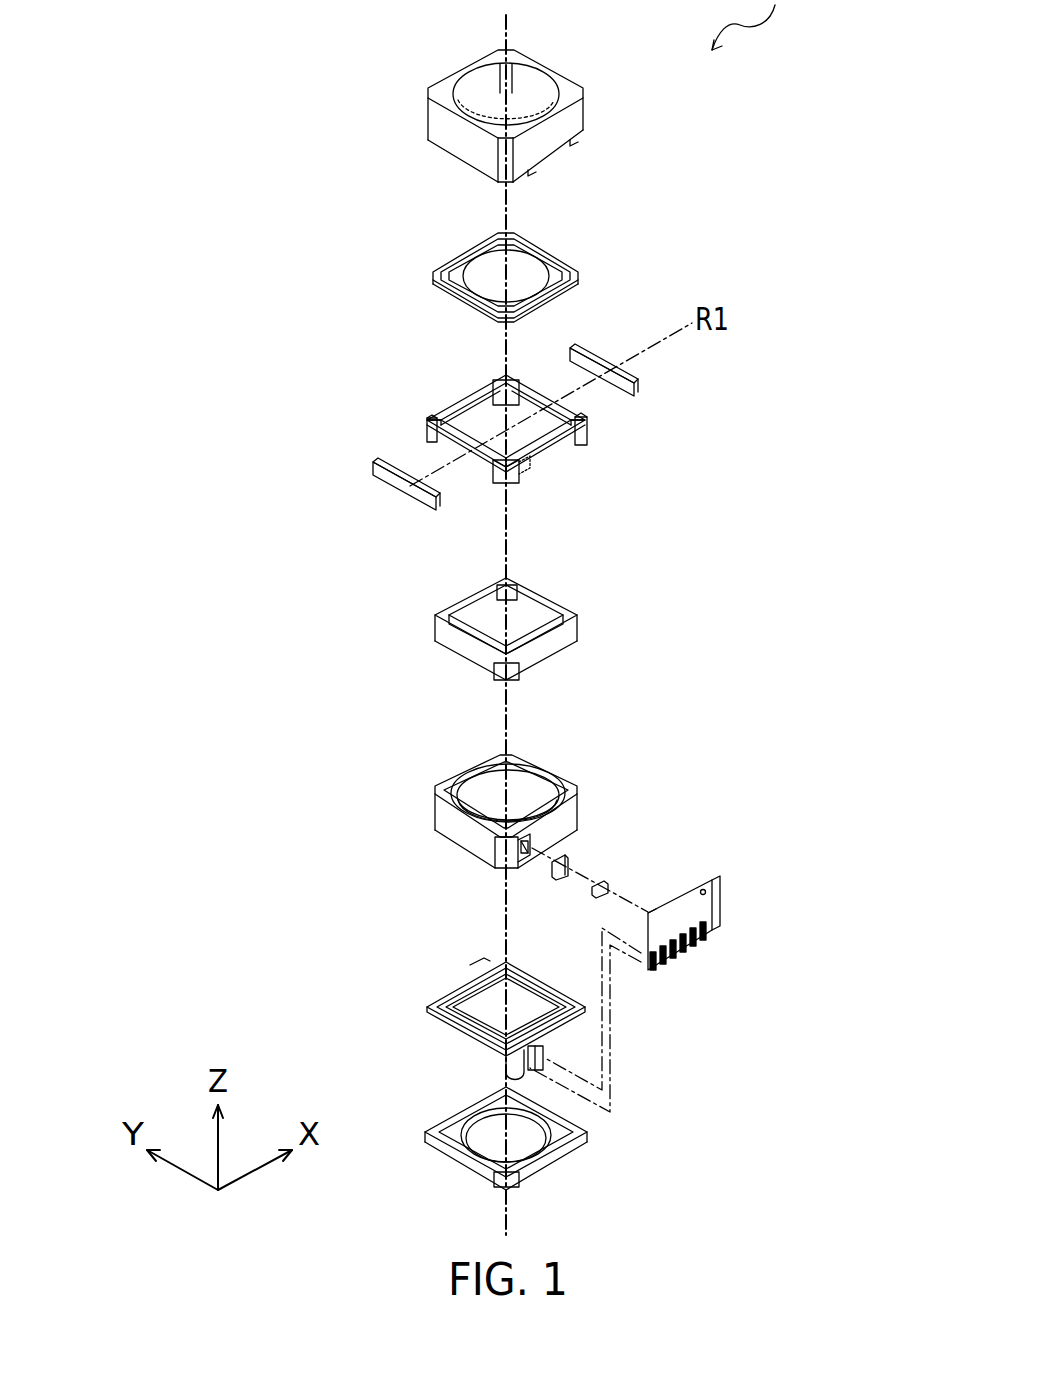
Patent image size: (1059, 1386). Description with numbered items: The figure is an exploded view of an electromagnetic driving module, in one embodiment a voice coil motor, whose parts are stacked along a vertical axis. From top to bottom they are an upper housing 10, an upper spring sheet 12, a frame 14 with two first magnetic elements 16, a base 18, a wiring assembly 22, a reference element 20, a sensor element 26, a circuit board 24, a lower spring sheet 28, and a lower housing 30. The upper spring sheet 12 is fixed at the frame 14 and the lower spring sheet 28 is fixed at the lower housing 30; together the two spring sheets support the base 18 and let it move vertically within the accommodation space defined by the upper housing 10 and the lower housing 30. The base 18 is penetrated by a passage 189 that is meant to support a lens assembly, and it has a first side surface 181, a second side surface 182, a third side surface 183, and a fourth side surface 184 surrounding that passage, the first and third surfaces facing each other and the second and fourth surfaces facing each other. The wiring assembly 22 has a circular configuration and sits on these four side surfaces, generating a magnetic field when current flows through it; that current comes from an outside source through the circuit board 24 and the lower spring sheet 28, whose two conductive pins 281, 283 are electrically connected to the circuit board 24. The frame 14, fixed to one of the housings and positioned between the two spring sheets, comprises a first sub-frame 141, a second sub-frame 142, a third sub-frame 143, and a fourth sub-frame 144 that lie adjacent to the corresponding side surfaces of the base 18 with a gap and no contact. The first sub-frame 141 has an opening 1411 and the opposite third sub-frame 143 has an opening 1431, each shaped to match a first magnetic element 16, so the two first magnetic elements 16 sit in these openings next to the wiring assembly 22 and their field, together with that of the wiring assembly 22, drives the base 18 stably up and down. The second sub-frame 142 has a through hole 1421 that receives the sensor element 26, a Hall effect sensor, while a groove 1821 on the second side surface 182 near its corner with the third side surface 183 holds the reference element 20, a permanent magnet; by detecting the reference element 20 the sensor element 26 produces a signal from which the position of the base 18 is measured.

The upper housing 10 is at (595, 112).
The upper spring sheet 12 is at (575, 268).
The frame 14 is at (541, 451).
The first sub-frame 141 is at (590, 418).
The opening 1411 is at (575, 410).
The second sub-frame 142 is at (548, 458).
The through hole 1421 is at (527, 462).
The third sub-frame 143 is at (427, 443).
The opening 1431 is at (467, 463).
The fourth sub-frame 144 is at (462, 405).
The first magnetic element 16 is at (378, 460).
The base 18 is at (506, 810).
The first side surface 181 is at (565, 780).
The second side surface 182 is at (570, 822).
The groove 1821 is at (520, 866).
The third side surface 183 is at (440, 812).
The fourth side surface 184 is at (445, 775).
The passage 189 is at (540, 778).
The reference element 20 is at (553, 880).
The wiring assembly 22 is at (580, 625).
The circuit board 24 is at (702, 904).
The sensor element 26 is at (596, 898).
The lower spring sheet 28 is at (430, 1000).
The conductive pin 281 is at (512, 1080).
The conductive pin 283 is at (510, 1060).
The lower housing 30 is at (590, 1138).